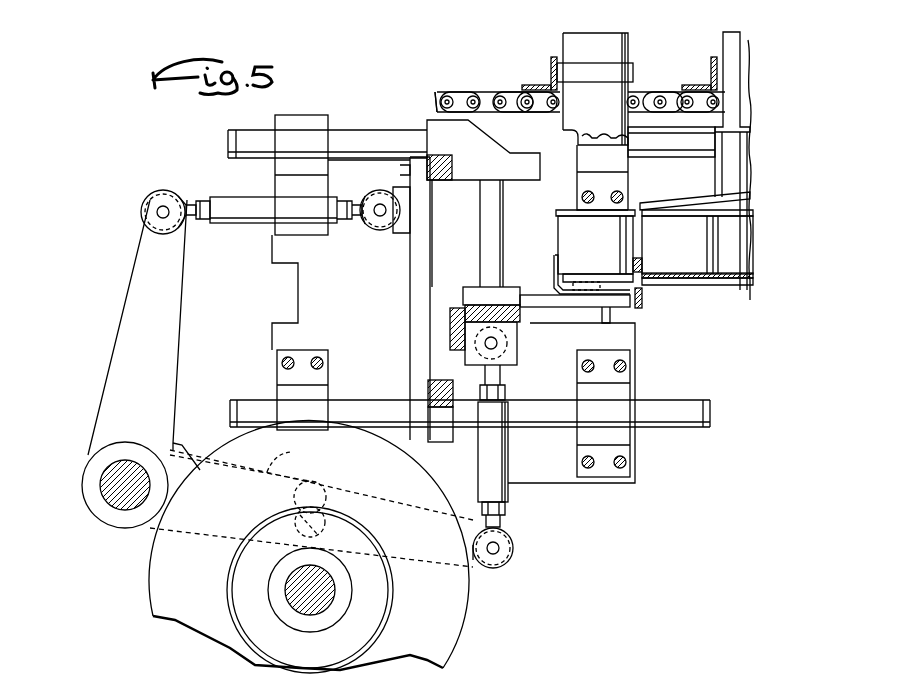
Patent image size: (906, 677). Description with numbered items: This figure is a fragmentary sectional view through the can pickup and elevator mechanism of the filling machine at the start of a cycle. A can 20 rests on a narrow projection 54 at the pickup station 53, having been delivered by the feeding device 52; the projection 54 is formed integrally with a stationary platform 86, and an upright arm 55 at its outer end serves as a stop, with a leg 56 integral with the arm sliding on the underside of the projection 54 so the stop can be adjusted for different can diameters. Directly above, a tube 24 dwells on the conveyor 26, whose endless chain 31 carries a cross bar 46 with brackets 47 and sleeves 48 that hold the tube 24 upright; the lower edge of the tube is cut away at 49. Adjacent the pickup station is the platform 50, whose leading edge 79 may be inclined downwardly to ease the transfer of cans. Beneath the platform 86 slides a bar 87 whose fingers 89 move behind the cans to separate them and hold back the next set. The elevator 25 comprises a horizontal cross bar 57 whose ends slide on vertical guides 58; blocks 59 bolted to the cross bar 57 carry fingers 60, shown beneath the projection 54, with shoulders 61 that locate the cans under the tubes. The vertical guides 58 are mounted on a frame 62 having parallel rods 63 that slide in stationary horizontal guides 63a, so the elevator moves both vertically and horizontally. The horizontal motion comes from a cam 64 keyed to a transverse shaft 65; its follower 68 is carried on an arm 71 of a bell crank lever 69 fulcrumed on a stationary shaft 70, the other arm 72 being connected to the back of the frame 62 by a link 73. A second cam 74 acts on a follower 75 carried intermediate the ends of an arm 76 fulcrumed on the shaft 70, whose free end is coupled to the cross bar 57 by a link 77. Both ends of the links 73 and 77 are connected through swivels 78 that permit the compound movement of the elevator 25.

The can 20 is at (560, 240).
The tube 24 is at (608, 38).
The elevator 25 is at (533, 324).
The conveyor 26 is at (447, 85).
The endless chain 31 is at (485, 95).
The cross bar 46 is at (551, 65).
The bracket 47 is at (535, 85).
The sleeve 48 is at (637, 68).
The cut-away portion 49 is at (603, 137).
The platform 50 is at (702, 193).
The feeding device 52 is at (730, 289).
The pickup station 53 is at (543, 230).
The projection 54 is at (597, 280).
The upright arm 55 is at (553, 266).
The leg 56 is at (572, 300).
The cross bar 57 is at (468, 310).
The vertical guide 58 is at (480, 242).
The block 59 is at (470, 287).
The finger 60 is at (604, 323).
The shoulder 61 is at (558, 290).
The frame 62 is at (410, 316).
The rod 63 is at (382, 136).
The horizontal guide 63a is at (320, 118).
The cam 64 is at (155, 590).
The transverse shaft 65 is at (310, 616).
The follower 68 is at (310, 480).
The bell crank lever 69 is at (84, 431).
The stationary shaft 70 is at (100, 470).
The arm 71 is at (288, 466).
The arm 72 is at (98, 405).
The link 73 is at (250, 226).
The cam 74 is at (165, 636).
The follower 75 is at (320, 532).
The arm 76 is at (485, 565).
The link 77 is at (508, 466).
The swivel 78 is at (180, 202).
The leading edge 79 is at (660, 202).
The stationary platform 86 is at (688, 280).
The bar 87 is at (645, 305).
The finger 89 is at (645, 268).